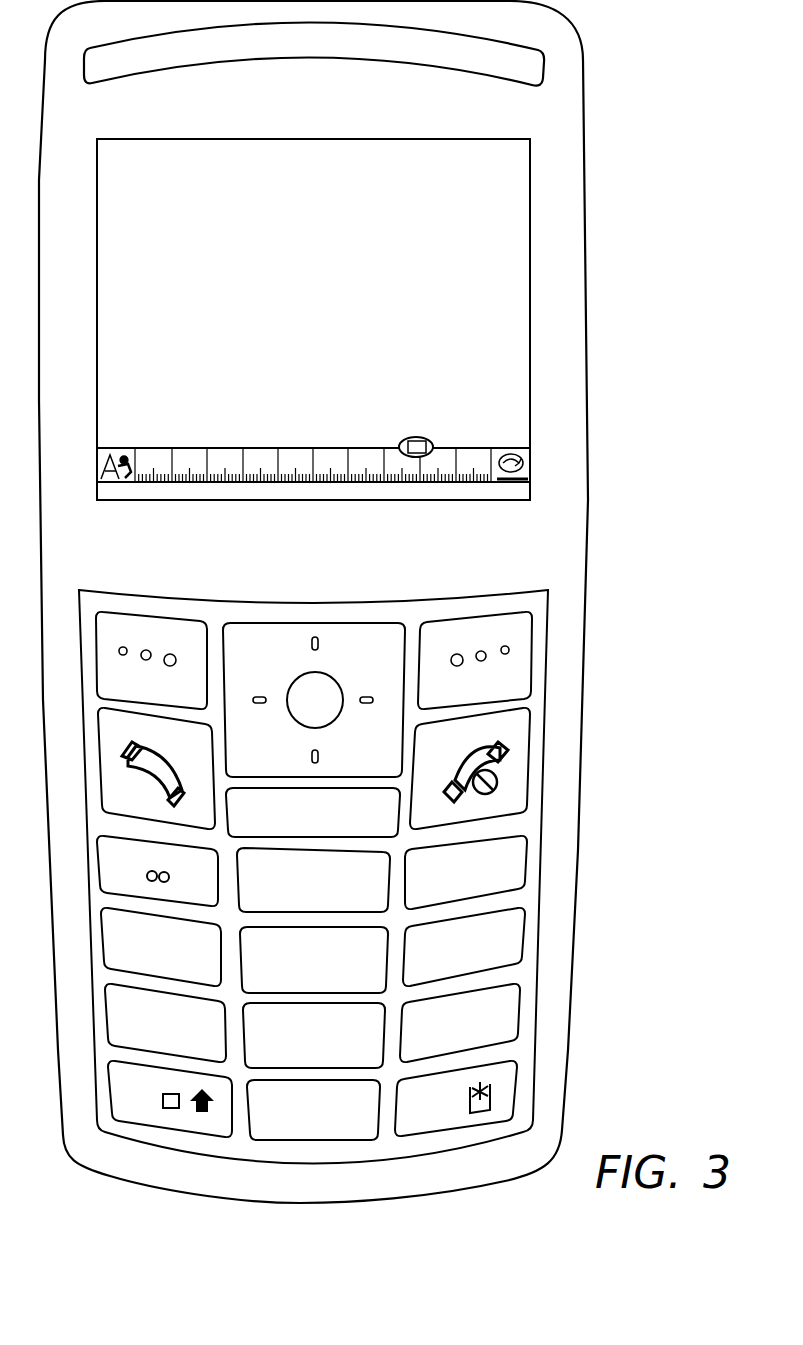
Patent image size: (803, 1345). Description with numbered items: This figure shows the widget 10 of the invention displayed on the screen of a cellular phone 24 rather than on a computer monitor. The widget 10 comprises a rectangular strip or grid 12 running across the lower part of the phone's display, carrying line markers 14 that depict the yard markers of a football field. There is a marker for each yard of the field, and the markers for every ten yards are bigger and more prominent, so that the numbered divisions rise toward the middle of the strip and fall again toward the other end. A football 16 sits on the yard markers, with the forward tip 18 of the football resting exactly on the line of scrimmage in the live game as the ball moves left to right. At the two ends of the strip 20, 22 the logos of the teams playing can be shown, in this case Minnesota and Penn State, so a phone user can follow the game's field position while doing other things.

The widget 10 is at (253, 408).
The rectangular strip or grid 12 is at (216, 470).
The line markers 14 is at (345, 475).
The football 16 is at (405, 440).
The forward tip of the football 18 is at (432, 442).
The end of the strip 20 is at (108, 450).
The end of the strip 22 is at (515, 448).
The cellular phone 24 is at (575, 535).